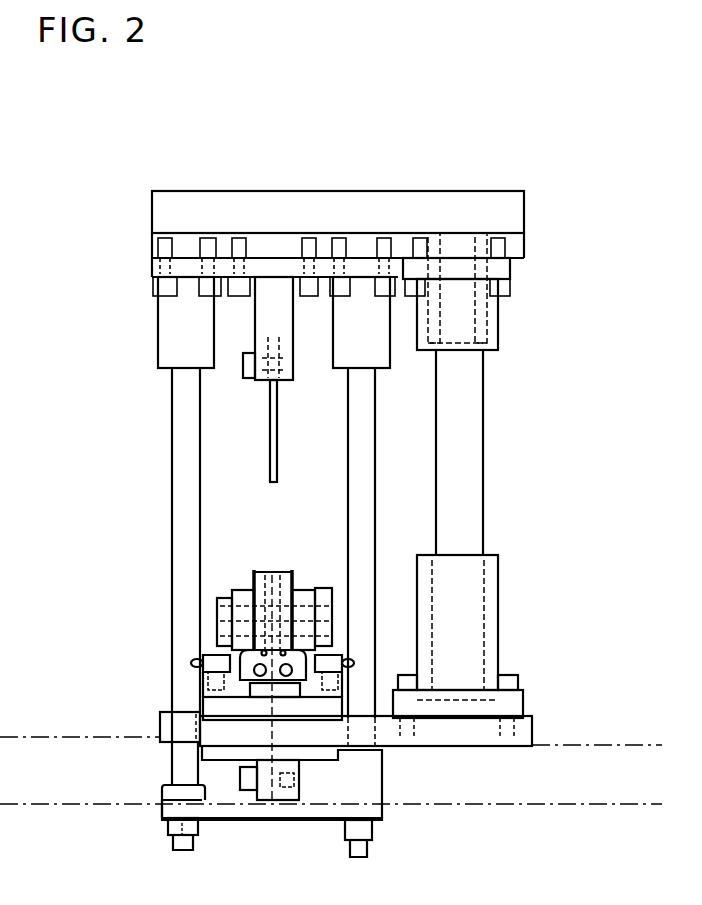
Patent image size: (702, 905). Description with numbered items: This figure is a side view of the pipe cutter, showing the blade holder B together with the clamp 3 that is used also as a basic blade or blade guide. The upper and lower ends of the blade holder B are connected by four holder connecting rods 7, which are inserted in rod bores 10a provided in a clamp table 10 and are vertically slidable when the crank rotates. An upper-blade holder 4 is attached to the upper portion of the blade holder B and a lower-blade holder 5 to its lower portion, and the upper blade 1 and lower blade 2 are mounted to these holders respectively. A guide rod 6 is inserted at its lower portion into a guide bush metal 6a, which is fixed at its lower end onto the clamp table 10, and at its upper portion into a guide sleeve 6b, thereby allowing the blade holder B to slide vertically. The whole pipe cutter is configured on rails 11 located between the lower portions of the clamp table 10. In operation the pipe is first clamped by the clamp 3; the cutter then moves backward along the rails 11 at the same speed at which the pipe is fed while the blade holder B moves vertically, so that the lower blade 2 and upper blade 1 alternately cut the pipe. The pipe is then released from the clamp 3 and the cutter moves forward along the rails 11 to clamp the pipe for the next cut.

The blade holder B is at (352, 183).
The upper blade 1 is at (278, 437).
The lower blade 2 is at (264, 757).
The clamp 3 is at (300, 590).
The upper-blade holder 4 is at (282, 334).
The lower-blade holder 5 is at (303, 818).
The guide rod 6 is at (485, 462).
The guide bush metal 6a is at (498, 608).
The guide sleeve 6b is at (498, 310).
The holder connecting rods 7 is at (176, 494).
The clamp table 10 is at (534, 730).
The rod bores 10a is at (172, 712).
The rails 11 is at (566, 796).